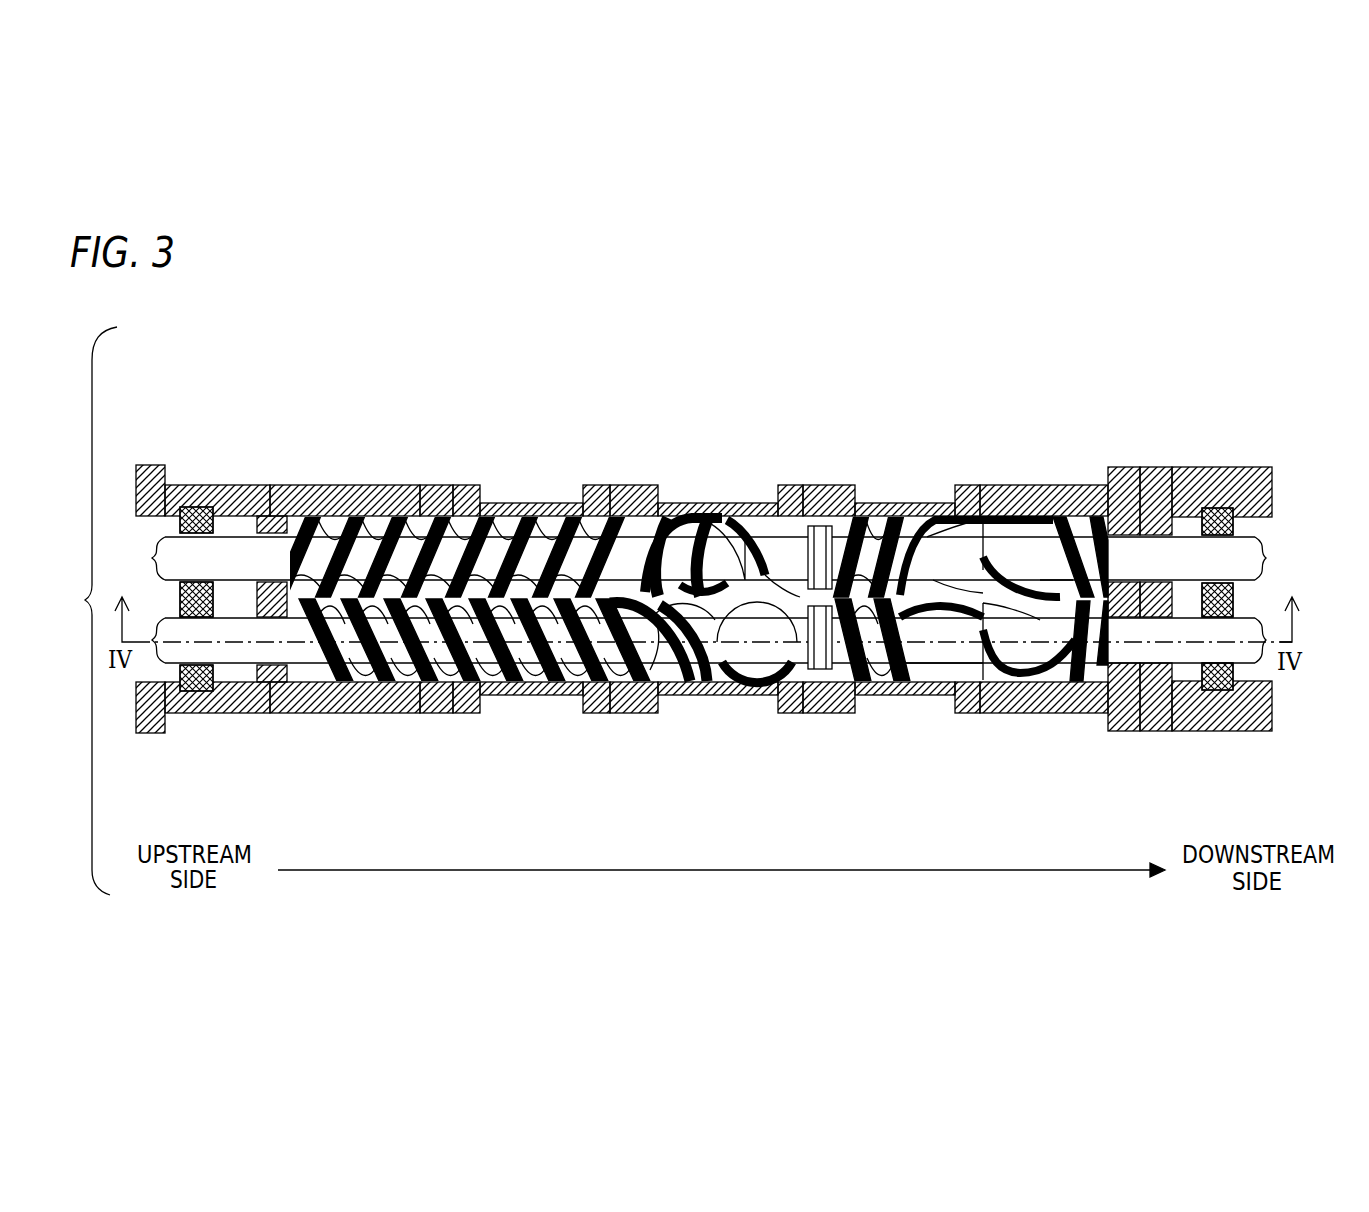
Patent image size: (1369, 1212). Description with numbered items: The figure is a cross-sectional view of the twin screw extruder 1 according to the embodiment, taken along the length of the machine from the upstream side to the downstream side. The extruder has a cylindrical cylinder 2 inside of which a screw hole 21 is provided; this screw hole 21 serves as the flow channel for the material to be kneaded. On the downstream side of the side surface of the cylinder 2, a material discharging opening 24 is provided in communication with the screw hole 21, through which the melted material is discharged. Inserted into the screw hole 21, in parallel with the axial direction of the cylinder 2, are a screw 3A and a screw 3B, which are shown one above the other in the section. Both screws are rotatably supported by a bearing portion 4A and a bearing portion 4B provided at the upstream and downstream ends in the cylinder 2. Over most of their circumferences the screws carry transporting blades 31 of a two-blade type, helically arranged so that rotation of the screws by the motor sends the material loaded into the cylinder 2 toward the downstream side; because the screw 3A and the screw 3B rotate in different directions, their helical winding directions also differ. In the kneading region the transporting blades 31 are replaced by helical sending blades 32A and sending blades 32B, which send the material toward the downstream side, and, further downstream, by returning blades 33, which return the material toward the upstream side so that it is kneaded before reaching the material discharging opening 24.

The twin screw extruder 1 is at (1150, 368).
The cylinder 2 is at (303, 485).
The screw 3A is at (917, 503).
The screw 3B is at (967, 713).
The bearing portion 4A is at (197, 485).
The bearing portion 4B is at (1227, 467).
The screw hole 21 is at (1000, 487).
The material discharging opening 24 is at (1052, 715).
The transporting blades 31 is at (428, 485).
The sending blades 32A is at (723, 516).
The sending blades 32B is at (645, 516).
The returning blades 33 is at (783, 516).